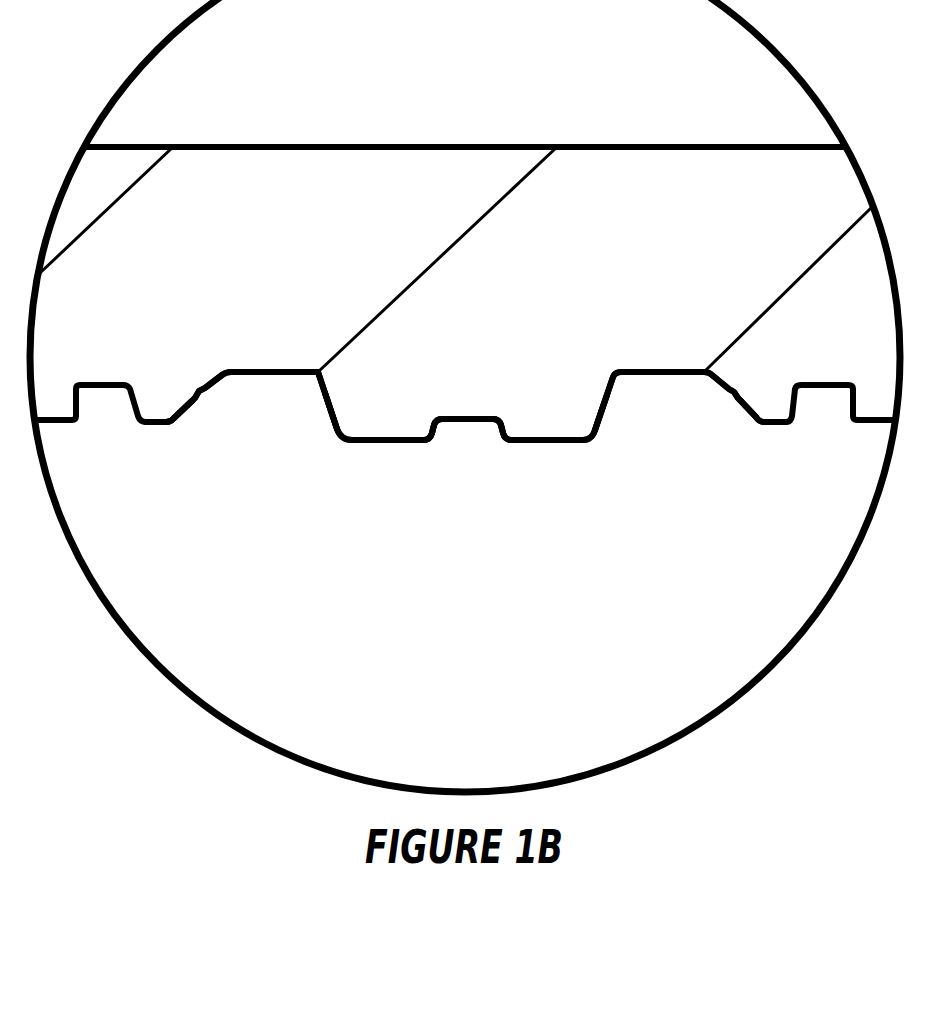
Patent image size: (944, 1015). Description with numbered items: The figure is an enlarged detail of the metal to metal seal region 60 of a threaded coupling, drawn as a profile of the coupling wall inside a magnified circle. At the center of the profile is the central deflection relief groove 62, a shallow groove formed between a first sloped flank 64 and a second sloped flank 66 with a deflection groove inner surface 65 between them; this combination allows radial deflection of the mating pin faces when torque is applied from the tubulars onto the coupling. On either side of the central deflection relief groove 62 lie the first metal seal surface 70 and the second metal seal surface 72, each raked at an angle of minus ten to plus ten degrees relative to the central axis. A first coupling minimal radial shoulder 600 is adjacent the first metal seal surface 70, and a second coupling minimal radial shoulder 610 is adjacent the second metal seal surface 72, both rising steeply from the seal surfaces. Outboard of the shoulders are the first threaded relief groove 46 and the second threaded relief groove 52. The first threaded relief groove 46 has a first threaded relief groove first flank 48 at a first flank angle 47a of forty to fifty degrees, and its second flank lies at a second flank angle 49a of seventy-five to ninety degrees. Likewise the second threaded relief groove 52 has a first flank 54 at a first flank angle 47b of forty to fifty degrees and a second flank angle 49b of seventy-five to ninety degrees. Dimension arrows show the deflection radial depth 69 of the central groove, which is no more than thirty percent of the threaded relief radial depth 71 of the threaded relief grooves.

The metal to metal seal region 60 is at (541, 514).
The first threaded relief groove first flank 48 is at (187, 418).
The first threaded relief groove first flank angle 47a is at (254, 379).
The first threaded relief groove 46 is at (263, 377).
The first threaded relief groove second flank angle 49a is at (320, 412).
The first coupling minimal radial shoulder 600 is at (331, 417).
The threaded relief radial depth 71 is at (318, 372).
The deflection radial depth 69 is at (407, 465).
The first metal seal surface 70 is at (390, 445).
The first sloped flank 64 is at (433, 437).
The deflection groove inner surface 65 is at (465, 423).
The central deflection relief groove 62 is at (446, 453).
The second sloped flank 66 is at (494, 436).
The second metal seal surface 72 is at (542, 445).
The second coupling minimal radial shoulder 610 is at (601, 416).
The second threaded relief groove second flank angle 49b is at (652, 379).
The second threaded relief groove 52 is at (665, 377).
The second threaded relief groove first flank angle 47b is at (732, 409).
The second threaded relief groove first flank 54 is at (748, 417).